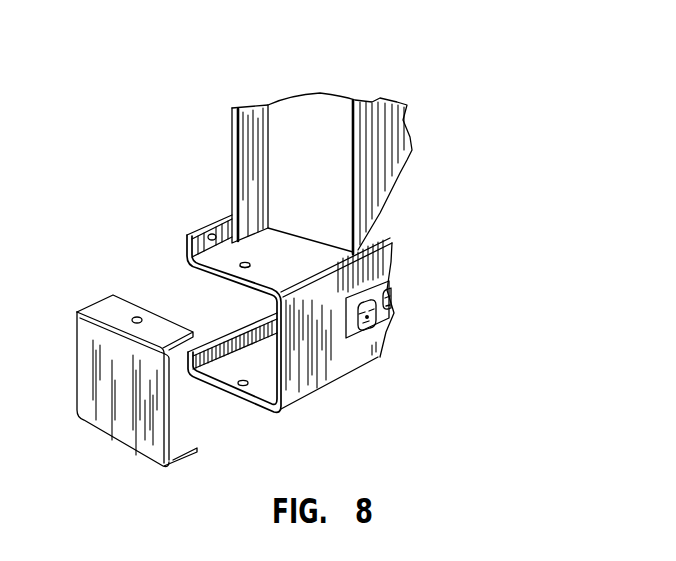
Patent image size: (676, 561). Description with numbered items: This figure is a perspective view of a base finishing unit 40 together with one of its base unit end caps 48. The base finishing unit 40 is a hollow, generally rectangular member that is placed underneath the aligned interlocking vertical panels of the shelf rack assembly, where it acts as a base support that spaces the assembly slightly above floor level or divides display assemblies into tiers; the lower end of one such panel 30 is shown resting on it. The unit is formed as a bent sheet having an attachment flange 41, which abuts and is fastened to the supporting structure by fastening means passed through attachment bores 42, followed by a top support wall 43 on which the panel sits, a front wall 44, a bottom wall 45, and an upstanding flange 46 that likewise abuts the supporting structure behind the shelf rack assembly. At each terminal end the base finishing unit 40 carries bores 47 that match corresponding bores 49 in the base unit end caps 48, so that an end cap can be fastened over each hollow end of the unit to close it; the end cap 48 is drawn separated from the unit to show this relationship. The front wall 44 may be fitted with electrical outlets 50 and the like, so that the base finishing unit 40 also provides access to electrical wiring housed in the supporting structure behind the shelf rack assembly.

The partition panel 30 is at (320, 120).
The base finishing unit 40 is at (388, 278).
The attachment flange 41 is at (186, 243).
The attachment bores 42 is at (211, 233).
The top support wall 43 is at (220, 258).
The front wall 44 is at (316, 383).
The bottom wall 45 is at (270, 397).
The upstanding flange 46 is at (233, 340).
The bores 47 is at (239, 387).
The base unit end caps 48 is at (110, 413).
The bores 49 is at (135, 316).
The electrical outlets 50 is at (372, 329).